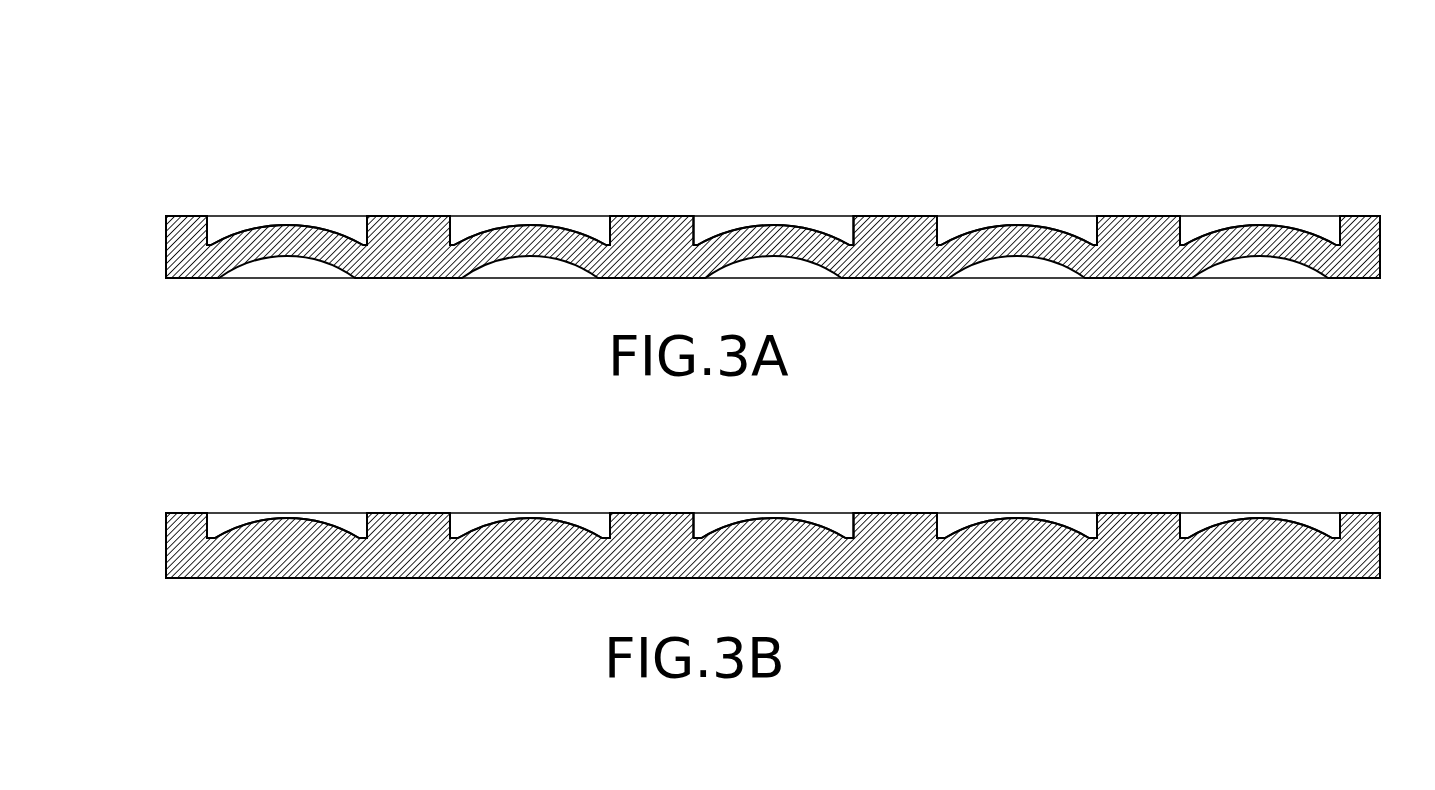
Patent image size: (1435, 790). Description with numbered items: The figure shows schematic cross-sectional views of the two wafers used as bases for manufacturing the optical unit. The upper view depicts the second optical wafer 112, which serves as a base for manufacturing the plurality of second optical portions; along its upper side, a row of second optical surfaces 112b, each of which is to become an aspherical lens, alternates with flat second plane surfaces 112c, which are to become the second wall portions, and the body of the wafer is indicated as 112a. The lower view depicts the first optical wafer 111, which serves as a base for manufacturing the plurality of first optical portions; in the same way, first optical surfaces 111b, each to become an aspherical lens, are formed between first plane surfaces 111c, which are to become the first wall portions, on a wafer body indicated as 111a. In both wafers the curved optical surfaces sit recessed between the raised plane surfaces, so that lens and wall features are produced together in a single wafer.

In FIG. 3A, the second optical wafer 112 is at (1240, 141).
In FIG. 3A, the mold base 112a is at (166, 253).
In FIG. 3A, the second optical surface 112b is at (285, 223).
In FIG. 3A, the second plane surface 112c is at (185, 215).
In FIG. 3B, the first optical wafer 111 is at (1232, 432).
In FIG. 3B, the mold base 111a is at (166, 545).
In FIG. 3B, the first optical surface 111b is at (290, 518).
In FIG. 3B, the first plane surface 111c is at (185, 512).